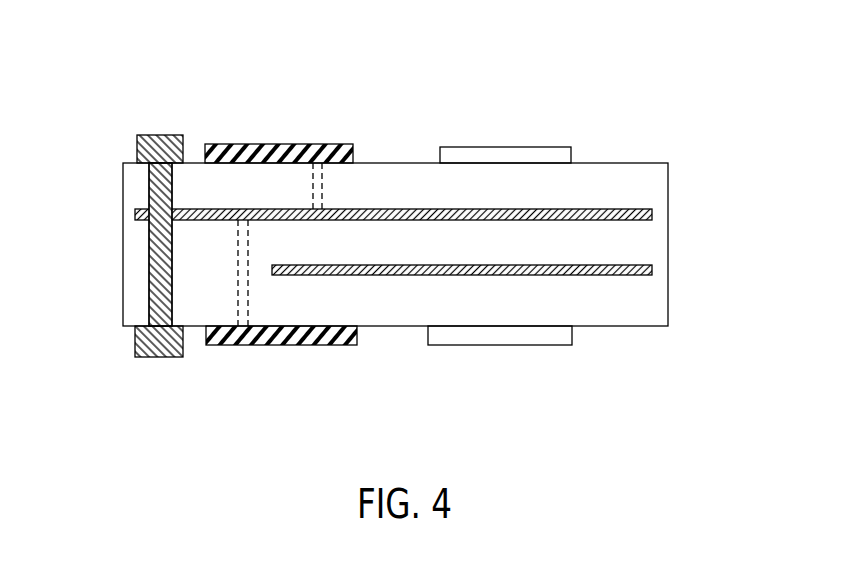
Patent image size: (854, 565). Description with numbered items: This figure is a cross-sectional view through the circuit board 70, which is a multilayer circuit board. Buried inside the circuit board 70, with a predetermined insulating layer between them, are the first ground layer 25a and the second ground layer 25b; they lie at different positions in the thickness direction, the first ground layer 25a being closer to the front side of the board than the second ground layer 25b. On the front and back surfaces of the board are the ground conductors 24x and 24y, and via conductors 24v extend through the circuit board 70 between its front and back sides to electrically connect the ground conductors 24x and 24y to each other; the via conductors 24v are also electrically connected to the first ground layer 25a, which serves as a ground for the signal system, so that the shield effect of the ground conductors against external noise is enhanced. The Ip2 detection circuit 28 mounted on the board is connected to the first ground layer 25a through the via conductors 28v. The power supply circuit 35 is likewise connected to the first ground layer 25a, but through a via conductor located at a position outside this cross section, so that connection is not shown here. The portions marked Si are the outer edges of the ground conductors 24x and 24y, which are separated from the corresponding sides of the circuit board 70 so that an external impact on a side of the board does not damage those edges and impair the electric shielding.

The circuit board 70 is at (400, 238).
The ground conductor 24x is at (137, 150).
The ground conductor 24y is at (147, 340).
The via conductors 24v is at (150, 240).
The first ground layer 25a is at (652, 216).
The second ground layer 25b is at (652, 273).
The Ip2 detection circuit 28 is at (247, 130).
The via conductors 28v is at (322, 185).
The power supply circuit 35 is at (490, 147).
The outer edges of the ground conductors Si is at (137, 140).